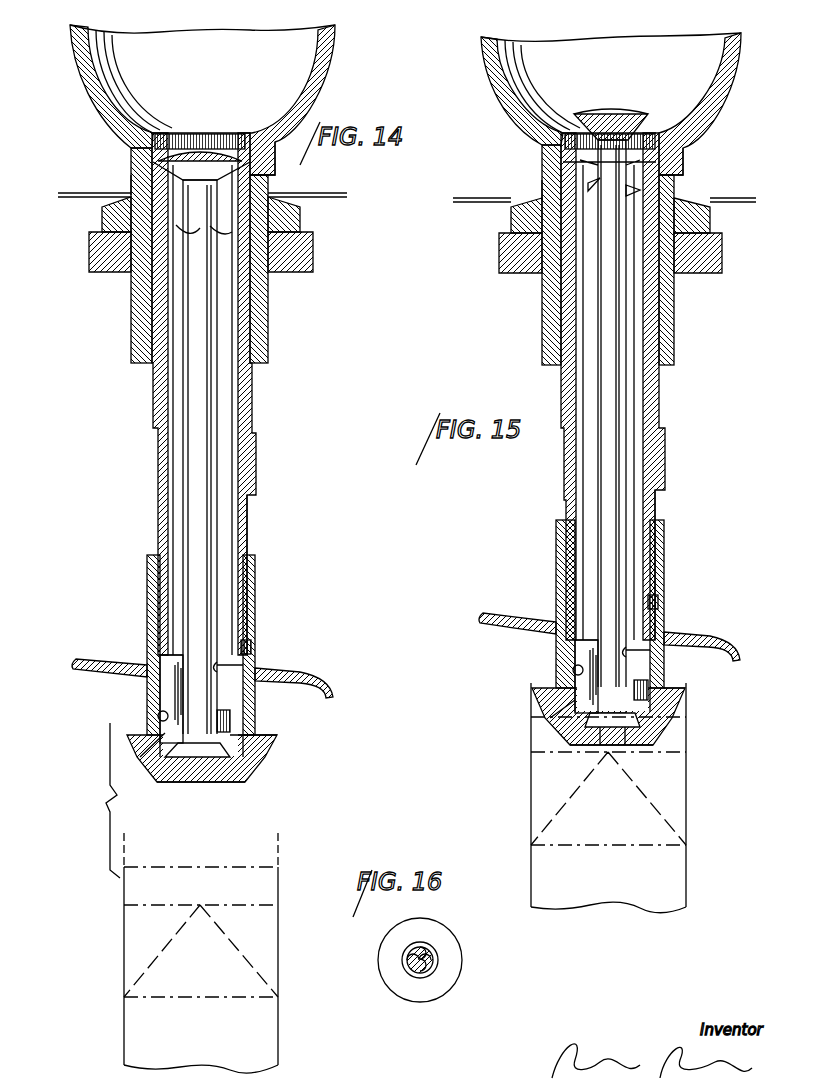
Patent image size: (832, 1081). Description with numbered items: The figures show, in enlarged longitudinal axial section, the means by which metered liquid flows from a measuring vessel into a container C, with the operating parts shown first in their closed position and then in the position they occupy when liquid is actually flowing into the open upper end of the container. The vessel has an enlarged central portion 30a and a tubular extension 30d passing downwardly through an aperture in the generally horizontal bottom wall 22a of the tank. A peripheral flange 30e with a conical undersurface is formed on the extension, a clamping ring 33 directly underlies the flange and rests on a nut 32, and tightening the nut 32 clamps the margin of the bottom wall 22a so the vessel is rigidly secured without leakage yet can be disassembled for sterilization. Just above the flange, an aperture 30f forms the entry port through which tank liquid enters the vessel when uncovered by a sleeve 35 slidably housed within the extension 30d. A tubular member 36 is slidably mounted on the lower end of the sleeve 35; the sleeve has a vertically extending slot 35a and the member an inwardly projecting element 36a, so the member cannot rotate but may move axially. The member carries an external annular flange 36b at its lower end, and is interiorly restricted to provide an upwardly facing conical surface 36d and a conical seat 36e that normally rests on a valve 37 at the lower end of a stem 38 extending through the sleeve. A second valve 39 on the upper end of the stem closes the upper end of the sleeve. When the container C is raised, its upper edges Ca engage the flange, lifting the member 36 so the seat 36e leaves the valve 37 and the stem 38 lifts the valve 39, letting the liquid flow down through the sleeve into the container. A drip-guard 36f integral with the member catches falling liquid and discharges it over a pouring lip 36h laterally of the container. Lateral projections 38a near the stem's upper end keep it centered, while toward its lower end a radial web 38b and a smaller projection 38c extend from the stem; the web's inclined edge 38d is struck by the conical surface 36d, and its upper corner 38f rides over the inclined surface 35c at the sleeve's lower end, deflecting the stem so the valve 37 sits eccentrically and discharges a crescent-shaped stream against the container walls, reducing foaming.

In FIG. 14, the enlarged central portion 30a is at (87, 74).
In FIG. 15, the enlarged central portion 30a is at (497, 56).
In FIG. 14, the tubular extension 30d is at (147, 317).
In FIG. 15, the tubular extension 30d is at (672, 343).
In FIG. 14, the peripheral flange 30e is at (128, 193).
In FIG. 15, the peripheral flange 30e is at (536, 198).
In FIG. 14, the aperture 30f is at (272, 183).
In FIG. 15, the aperture 30f is at (672, 165).
In FIG. 14, the bottom wall 22a is at (347, 194).
In FIG. 15, the bottom wall 22a is at (478, 198).
In FIG. 14, the clamping ring 33 is at (102, 217).
In FIG. 15, the clamping ring 33 is at (712, 221).
In FIG. 14, the nut 32 is at (313, 259).
In FIG. 15, the nut 32 is at (722, 258).
In FIG. 14, the sleeve 35 is at (248, 394).
In FIG. 15, the sleeve 35 is at (657, 395).
In FIG. 14, the vertically extending slot 35a is at (250, 592).
In FIG. 15, the vertically extending slot 35a is at (660, 567).
In FIG. 14, the inclined surface 35c is at (232, 665).
In FIG. 15, the inclined surface 35c is at (643, 647).
In FIG. 14, the tubular member 36 is at (257, 578).
In FIG. 15, the tubular member 36 is at (666, 525).
In FIG. 14, the inwardly projecting element 36a is at (250, 645).
In FIG. 15, the inwardly projecting element 36a is at (664, 598).
In FIG. 14, the external annular flange 36b is at (278, 741).
In FIG. 15, the external annular flange 36b is at (686, 699).
In FIG. 14, the upwardly facing conical surface 36d is at (165, 730).
In FIG. 15, the upwardly facing conical surface 36d is at (576, 702).
In FIG. 14, the conical seat 36e is at (160, 774).
In FIG. 15, the conical seat 36e is at (583, 742).
In FIG. 14, the drip-guard 36f is at (105, 670).
In FIG. 15, the drip-guard 36f is at (501, 624).
In FIG. 14, the pouring lip 36h is at (334, 697).
In FIG. 15, the pouring lip 36h is at (741, 650).
In FIG. 14, the valve 37 is at (173, 772).
In FIG. 15, the valve 37 is at (580, 748).
In FIG. 16, the valve 37 is at (388, 958).
In FIG. 14, the stem 38 is at (192, 425).
In FIG. 15, the stem 38 is at (607, 430).
In FIG. 14, the lateral projections 38a is at (230, 230).
In FIG. 15, the lateral projections 38a is at (640, 190).
In FIG. 14, the radial web 38b is at (175, 680).
In FIG. 15, the radial web 38b is at (579, 633).
In FIG. 14, the smaller projection 38c is at (232, 715).
In FIG. 15, the smaller projection 38c is at (662, 677).
In FIG. 14, the inclined edge 38d is at (165, 704).
In FIG. 15, the inclined edge 38d is at (579, 668).
In FIG. 14, the upper corner 38f is at (165, 660).
In FIG. 15, the upper corner 38f is at (578, 640).
In FIG. 14, the second valve 39 is at (190, 158).
In FIG. 15, the second valve 39 is at (598, 118).
In FIG. 14, the container C is at (124, 933).
In FIG. 15, the container C is at (688, 818).
In FIG. 14, the upper edges Ca is at (222, 868).
In FIG. 15, the upper edges Ca is at (670, 722).